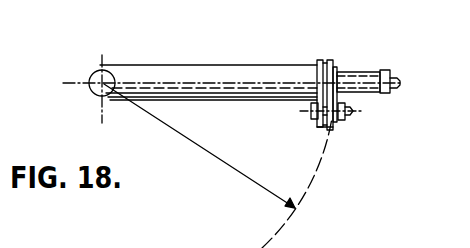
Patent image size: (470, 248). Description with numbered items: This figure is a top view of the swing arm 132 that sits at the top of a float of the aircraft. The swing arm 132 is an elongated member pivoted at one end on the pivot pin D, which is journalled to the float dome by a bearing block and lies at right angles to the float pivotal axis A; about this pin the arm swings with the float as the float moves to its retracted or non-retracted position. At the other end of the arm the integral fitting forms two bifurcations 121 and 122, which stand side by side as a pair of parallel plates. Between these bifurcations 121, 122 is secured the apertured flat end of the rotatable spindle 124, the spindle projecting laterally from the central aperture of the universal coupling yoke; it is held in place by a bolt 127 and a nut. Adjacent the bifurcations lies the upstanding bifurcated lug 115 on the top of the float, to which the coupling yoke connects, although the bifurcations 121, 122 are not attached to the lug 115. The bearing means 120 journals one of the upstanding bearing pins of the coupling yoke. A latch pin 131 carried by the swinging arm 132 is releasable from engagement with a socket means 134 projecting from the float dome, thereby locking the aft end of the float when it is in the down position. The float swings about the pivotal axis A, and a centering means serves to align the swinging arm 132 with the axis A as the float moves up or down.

The swing arm 132 is at (165, 75).
The pivot pin D is at (89, 83).
The bifurcation 122 is at (320, 60).
The bifurcation 121 is at (330, 60).
The bifurcated lug 115 is at (338, 67).
The latch pin 131 is at (392, 72).
The socket means 134 is at (389, 93).
The bearing means 120 is at (333, 122).
The bolt 127 is at (314, 120).
The spindle 124 is at (323, 130).
The float pivotal axis A is at (359, 112).